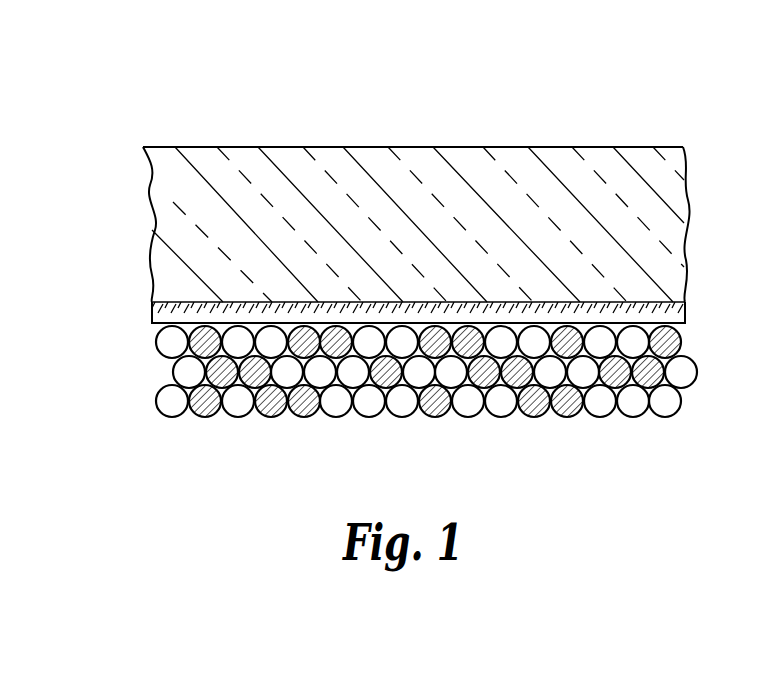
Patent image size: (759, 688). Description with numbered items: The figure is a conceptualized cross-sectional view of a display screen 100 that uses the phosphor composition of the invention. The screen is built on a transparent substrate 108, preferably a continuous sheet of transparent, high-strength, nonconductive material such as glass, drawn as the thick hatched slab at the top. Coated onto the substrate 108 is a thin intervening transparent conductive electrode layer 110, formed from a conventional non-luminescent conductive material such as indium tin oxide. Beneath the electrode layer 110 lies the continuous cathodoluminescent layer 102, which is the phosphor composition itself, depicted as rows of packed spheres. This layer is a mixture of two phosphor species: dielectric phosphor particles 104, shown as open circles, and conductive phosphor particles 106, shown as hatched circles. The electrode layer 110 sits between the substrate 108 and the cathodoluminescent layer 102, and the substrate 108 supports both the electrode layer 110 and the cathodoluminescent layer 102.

The display screen 100 is at (204, 95).
The transparent substrate 108 is at (157, 192).
The transparent conductive electrode layer 110 is at (157, 319).
The cathodoluminescent layer 102 is at (177, 368).
The dielectric phosphor particles 104 is at (366, 405).
The conductive phosphor particles 106 is at (290, 410).